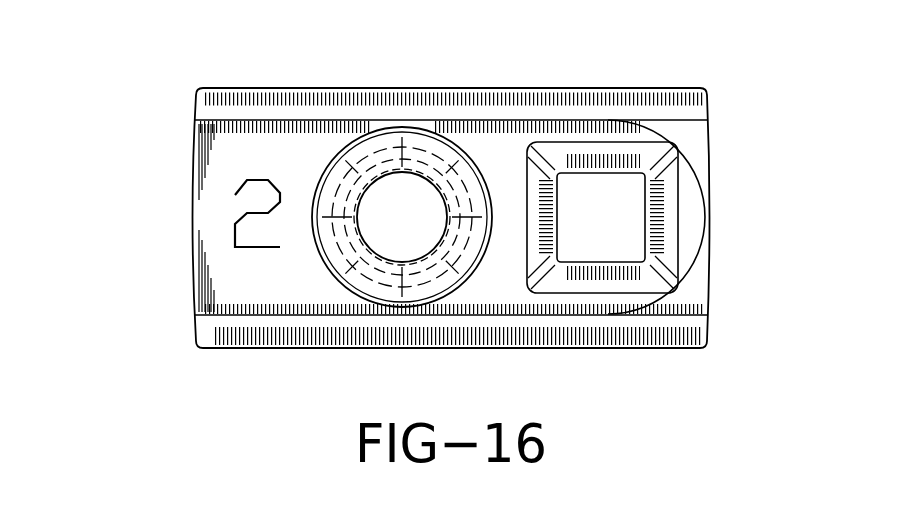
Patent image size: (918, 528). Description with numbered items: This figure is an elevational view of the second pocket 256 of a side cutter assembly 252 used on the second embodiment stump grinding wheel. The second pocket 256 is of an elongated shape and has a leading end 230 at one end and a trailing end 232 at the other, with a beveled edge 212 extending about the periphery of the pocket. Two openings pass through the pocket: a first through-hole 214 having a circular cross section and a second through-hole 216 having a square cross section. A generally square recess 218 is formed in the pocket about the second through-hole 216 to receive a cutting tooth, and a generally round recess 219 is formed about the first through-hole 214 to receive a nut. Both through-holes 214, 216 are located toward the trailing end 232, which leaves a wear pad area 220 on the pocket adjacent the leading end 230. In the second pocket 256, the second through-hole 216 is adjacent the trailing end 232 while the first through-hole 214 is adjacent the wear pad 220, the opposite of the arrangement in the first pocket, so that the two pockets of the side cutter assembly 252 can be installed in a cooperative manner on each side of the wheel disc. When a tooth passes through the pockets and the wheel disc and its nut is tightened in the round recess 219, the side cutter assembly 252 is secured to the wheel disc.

The beveled edge 212 is at (298, 112).
The first through-hole 214 is at (370, 245).
The second through-hole 216 is at (603, 262).
The square recess 218 is at (582, 156).
The round recess 219 is at (443, 263).
The wear pad area 220 is at (268, 158).
The leading end 230 is at (188, 258).
The trailing end 232 is at (712, 165).
The side cutter assembly 252 is at (233, 86).
The second pocket 256 is at (390, 88).